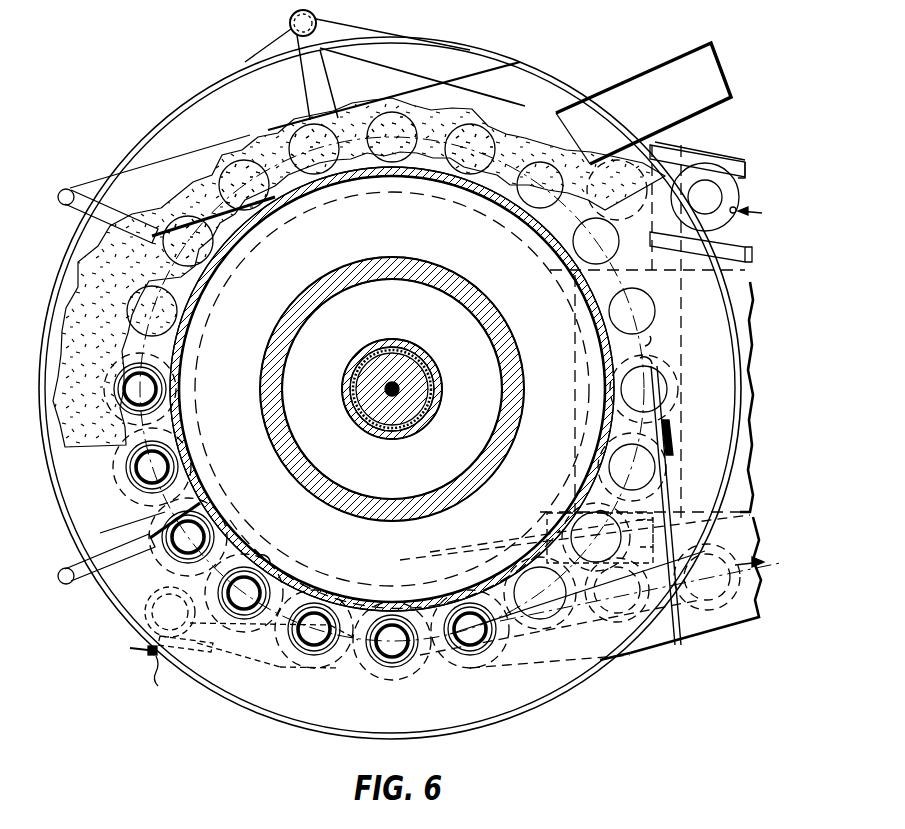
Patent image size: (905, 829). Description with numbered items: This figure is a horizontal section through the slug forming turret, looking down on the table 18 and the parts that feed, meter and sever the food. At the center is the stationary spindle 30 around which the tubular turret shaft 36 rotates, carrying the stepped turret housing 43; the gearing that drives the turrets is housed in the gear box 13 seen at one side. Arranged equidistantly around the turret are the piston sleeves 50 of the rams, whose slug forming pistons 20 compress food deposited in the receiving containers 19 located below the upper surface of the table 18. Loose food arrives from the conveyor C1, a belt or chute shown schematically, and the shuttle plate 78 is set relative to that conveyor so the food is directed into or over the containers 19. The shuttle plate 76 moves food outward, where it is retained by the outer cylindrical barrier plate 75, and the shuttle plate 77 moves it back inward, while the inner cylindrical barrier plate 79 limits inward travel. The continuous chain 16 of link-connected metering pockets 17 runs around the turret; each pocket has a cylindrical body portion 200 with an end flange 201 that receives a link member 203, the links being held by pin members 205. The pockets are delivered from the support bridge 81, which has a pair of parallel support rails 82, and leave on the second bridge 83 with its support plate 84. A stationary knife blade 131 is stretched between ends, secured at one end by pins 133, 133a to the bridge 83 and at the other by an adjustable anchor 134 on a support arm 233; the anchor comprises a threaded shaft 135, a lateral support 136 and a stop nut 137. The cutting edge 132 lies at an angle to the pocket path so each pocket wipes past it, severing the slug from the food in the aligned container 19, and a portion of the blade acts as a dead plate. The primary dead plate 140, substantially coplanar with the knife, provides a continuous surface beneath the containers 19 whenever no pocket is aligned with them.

The gear box 13 is at (746, 482).
The continuous chain 16 is at (300, 106).
The metering pocket 17 is at (740, 194).
The table 18 is at (393, 718).
The receiving container 19 is at (648, 364).
The slug forming piston 20 is at (129, 447).
The stationary spindle 30 is at (398, 352).
The tubular turret shaft 36 is at (347, 384).
The stepped turret housing 43 is at (363, 268).
The piston sleeve 50 is at (161, 386).
The cylindrical barrier plate 75 is at (58, 316).
The shuttle plate 76 is at (254, 224).
The shuttle plate 77 is at (676, 472).
The shuttle plate 78 is at (384, 99).
The cylindrical barrier plate 79 is at (184, 421).
The support bridge 81 is at (720, 157).
The support rail 82 is at (743, 170).
The second bridge 83 is at (718, 632).
The support plate 84 is at (753, 512).
The stationary knife blade 131 is at (272, 672).
The cutting edge 132 is at (306, 573).
The pin 133 is at (476, 681).
The pin 133a is at (612, 529).
The adjustable anchor 134 is at (152, 664).
The threaded shaft 135 is at (142, 649).
The lateral support 136 is at (202, 666).
The stop nut 137 is at (168, 678).
The primary dead plate 140 is at (578, 403).
The cylindrical body portion 200 is at (705, 197).
The flange 201 is at (191, 447).
The link member 203 is at (141, 523).
The pin member 205 is at (201, 478).
The support arm 233 is at (156, 606).
The conveyor C1 is at (656, 70).